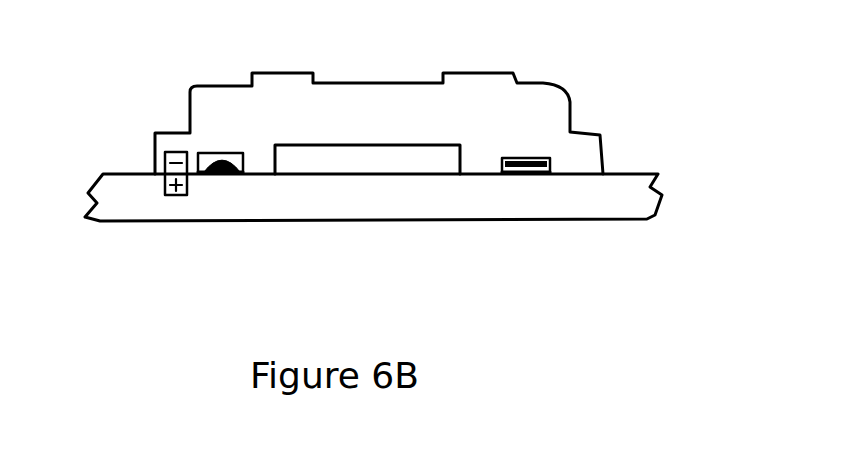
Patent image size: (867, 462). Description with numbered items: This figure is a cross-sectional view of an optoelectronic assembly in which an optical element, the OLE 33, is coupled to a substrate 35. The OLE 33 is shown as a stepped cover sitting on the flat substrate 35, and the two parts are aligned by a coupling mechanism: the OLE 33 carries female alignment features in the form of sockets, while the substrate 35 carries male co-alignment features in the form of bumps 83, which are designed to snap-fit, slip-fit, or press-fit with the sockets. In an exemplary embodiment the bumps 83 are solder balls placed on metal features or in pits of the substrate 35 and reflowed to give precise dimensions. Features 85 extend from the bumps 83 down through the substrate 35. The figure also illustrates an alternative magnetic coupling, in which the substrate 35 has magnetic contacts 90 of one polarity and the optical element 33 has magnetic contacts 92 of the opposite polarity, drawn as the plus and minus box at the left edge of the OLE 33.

The OLE 33 is at (376, 116).
The substrate 35 is at (146, 211).
The bumps 83 is at (203, 152).
The conductive vias 85 is at (217, 176).
The magnetic contacts 90 is at (170, 195).
The magnetic contacts 92 is at (175, 152).